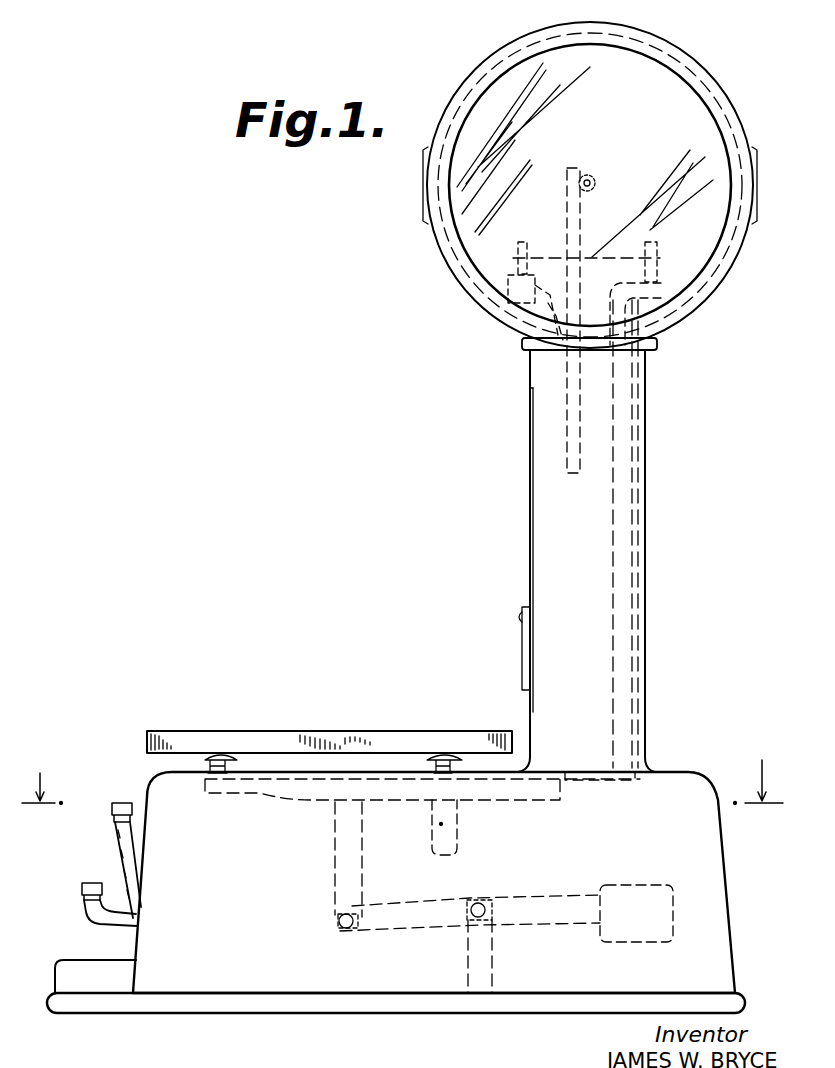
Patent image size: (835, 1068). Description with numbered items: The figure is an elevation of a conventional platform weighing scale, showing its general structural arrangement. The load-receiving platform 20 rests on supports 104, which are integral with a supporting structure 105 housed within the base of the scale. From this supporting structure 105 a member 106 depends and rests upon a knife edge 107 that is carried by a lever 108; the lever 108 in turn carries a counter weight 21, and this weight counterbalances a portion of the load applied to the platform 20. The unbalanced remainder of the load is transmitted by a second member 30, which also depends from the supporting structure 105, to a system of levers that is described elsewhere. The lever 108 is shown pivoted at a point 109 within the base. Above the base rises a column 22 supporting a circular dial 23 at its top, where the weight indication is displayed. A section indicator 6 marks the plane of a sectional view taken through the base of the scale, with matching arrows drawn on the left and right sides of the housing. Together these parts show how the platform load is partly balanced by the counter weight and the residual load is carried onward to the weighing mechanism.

The dial 23 is at (712, 88).
The column 22 is at (647, 489).
The platform 20 is at (410, 735).
The supports 104 is at (205, 759).
The supporting structure 105 is at (279, 787).
The member 106 is at (358, 847).
The member 30 is at (455, 824).
The knife edge 107 is at (341, 923).
The lever 108 is at (410, 925).
The pivot 109 is at (483, 906).
The counter weight 21 is at (636, 913).
The section line 6- 6 is at (402, 798).